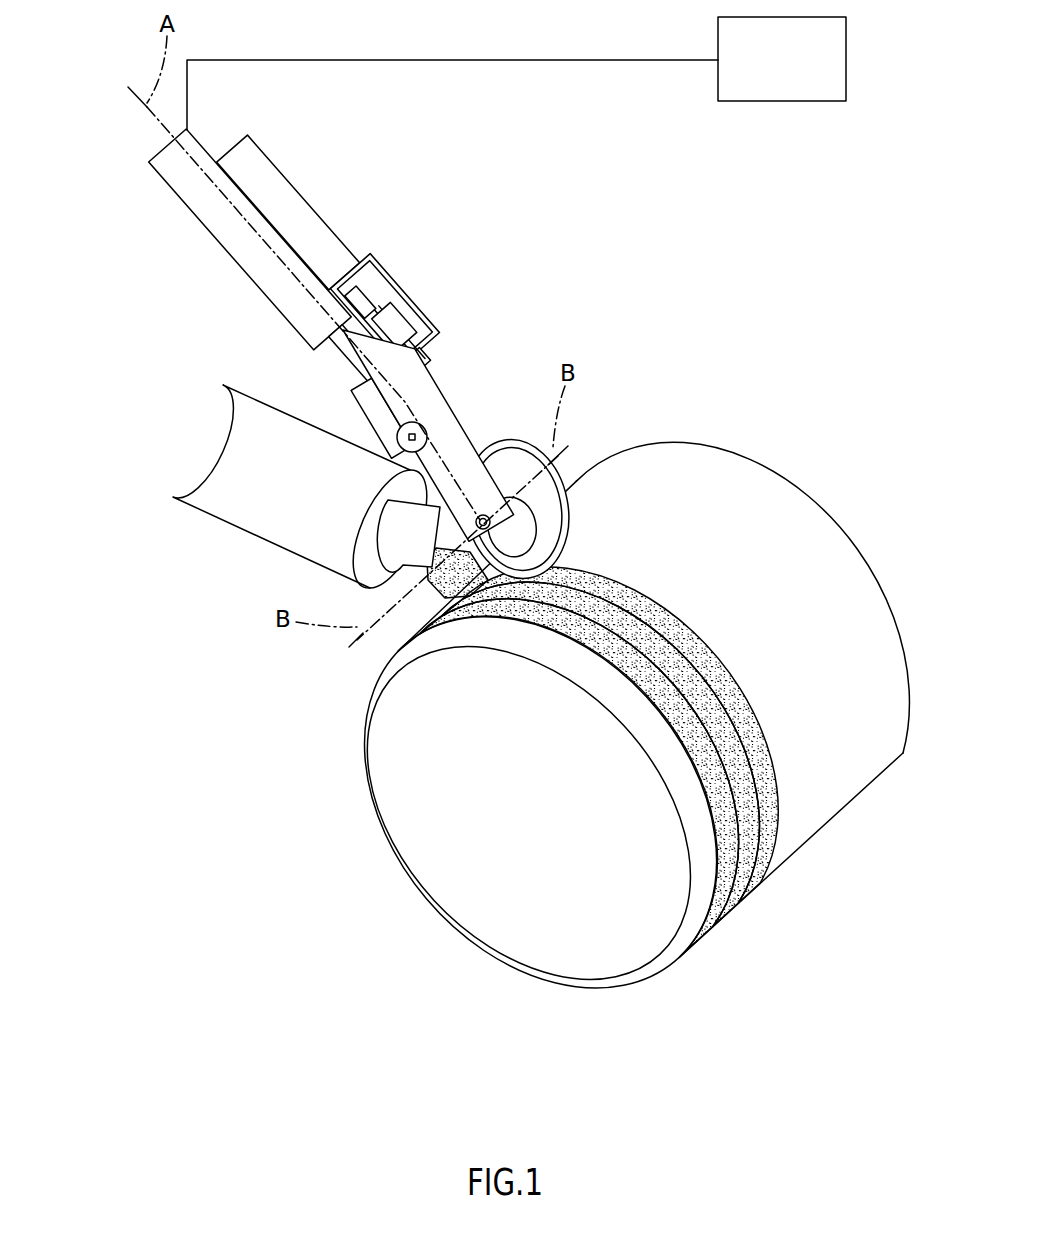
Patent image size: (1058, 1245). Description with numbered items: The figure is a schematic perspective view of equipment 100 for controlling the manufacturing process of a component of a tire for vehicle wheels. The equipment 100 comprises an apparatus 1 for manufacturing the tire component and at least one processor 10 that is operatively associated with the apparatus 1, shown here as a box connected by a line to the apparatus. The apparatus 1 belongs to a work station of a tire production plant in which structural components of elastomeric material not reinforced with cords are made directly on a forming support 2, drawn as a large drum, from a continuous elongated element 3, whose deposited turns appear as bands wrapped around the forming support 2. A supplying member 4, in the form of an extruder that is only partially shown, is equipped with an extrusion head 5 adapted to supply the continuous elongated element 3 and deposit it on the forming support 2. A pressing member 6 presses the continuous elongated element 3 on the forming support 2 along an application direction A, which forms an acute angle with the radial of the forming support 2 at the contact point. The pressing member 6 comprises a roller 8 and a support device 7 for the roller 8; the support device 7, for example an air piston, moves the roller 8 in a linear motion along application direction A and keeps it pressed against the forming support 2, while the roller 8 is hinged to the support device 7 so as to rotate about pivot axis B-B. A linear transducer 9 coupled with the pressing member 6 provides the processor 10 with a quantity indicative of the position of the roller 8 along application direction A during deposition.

The apparatus 1 is at (760, 352).
The forming support 2 is at (740, 497).
The continuous elongated element 3 is at (465, 585).
The supplying member 4 is at (212, 478).
The extrusion head 5 is at (397, 531).
The pressing member 6 is at (292, 259).
The support device 7 is at (303, 230).
The roller 8 is at (575, 522).
The linear transducer 9 is at (220, 218).
The processor 10 is at (796, 73).
The equipment 100 is at (232, 798).